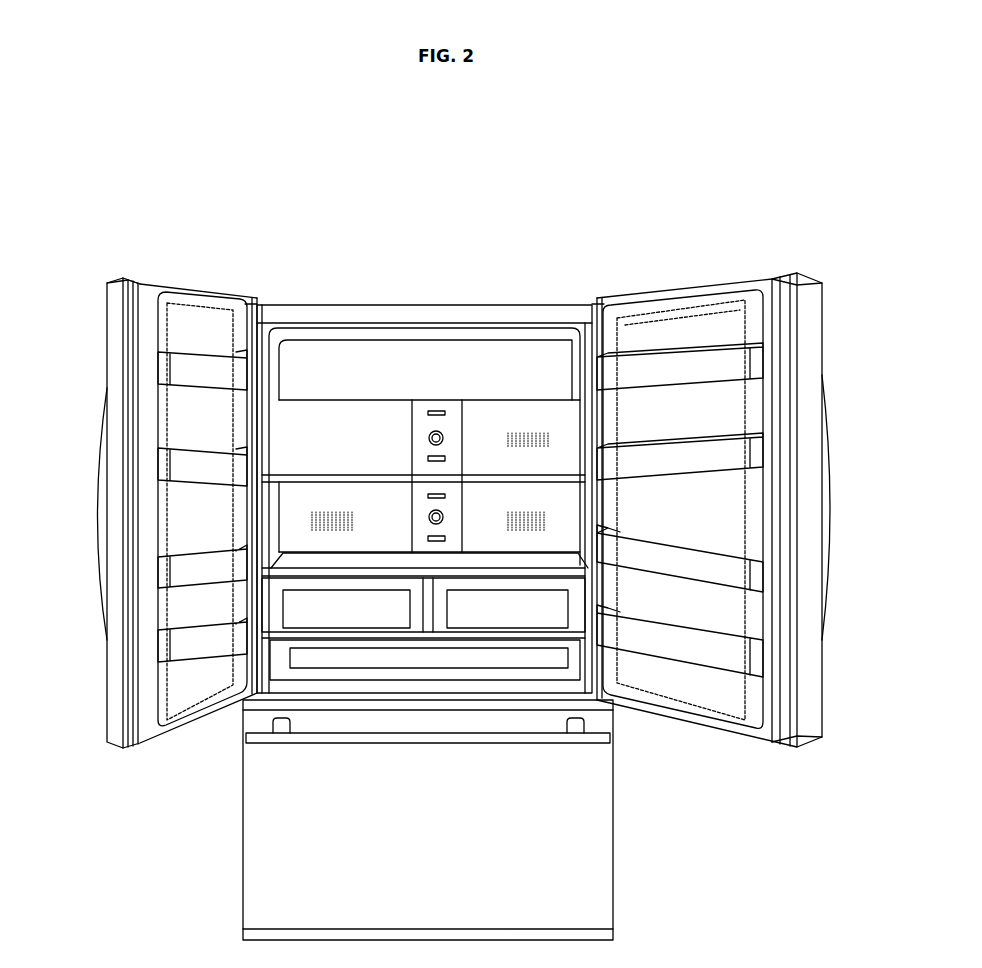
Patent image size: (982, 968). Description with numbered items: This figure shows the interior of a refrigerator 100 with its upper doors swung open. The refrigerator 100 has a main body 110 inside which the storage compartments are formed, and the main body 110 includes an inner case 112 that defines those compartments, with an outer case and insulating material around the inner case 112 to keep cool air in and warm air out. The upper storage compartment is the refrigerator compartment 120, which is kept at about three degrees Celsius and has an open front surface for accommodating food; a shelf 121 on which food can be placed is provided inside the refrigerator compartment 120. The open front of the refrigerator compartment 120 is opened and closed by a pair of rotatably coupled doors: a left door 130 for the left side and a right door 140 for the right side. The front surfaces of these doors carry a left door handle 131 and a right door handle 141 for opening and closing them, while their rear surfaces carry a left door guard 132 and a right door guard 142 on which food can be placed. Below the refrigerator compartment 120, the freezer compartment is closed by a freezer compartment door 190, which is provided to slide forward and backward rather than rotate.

The refrigerator 100 is at (374, 218).
The main body 110 is at (428, 312).
The inner case 112 is at (710, 322).
The refrigerator compartment 120 is at (514, 358).
The shelf 121 is at (482, 476).
The left door 130 is at (115, 358).
The left door handle 131 is at (103, 486).
The left door guard 132 is at (188, 350).
The right door 140 is at (818, 352).
The right door handle 141 is at (828, 445).
The right door guard 142 is at (663, 352).
The freezer compartment door 190 is at (260, 833).